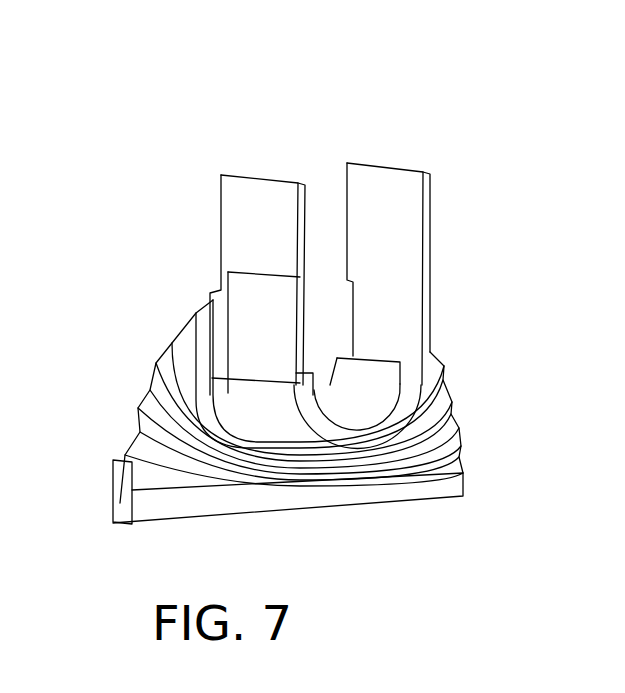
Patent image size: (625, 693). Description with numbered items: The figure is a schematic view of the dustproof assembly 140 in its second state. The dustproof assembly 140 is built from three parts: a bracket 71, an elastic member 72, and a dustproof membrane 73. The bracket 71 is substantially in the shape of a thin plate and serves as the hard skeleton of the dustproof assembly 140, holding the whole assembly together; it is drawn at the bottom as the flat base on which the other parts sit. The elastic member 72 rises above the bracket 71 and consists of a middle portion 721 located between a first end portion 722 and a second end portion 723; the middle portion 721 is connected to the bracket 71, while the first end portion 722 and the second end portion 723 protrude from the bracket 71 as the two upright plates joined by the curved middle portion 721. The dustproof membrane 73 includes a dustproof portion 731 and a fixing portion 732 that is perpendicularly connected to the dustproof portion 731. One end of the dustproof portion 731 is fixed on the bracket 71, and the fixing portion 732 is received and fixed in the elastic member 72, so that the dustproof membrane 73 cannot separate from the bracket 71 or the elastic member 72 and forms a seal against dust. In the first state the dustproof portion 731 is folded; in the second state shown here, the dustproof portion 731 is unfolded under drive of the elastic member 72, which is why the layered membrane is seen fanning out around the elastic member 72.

The dustproof assembly 140 is at (296, 56).
The bracket 71 is at (125, 508).
The elastic member 72 is at (383, 306).
The middle portion 721 is at (417, 359).
The first end portion 722 is at (267, 252).
The second end portion 723 is at (398, 238).
The dustproof membrane 73 is at (256, 366).
The dustproof portion 731 is at (180, 397).
The fixing portion 732 is at (261, 338).